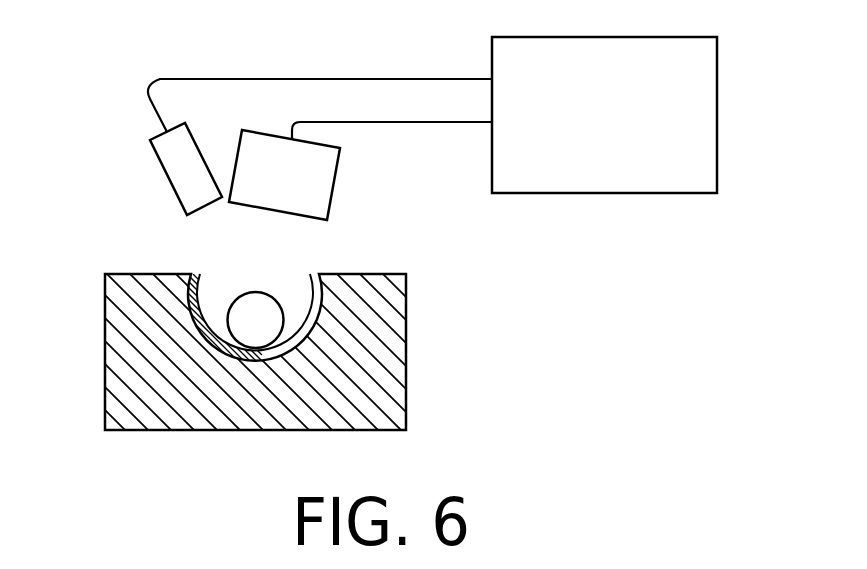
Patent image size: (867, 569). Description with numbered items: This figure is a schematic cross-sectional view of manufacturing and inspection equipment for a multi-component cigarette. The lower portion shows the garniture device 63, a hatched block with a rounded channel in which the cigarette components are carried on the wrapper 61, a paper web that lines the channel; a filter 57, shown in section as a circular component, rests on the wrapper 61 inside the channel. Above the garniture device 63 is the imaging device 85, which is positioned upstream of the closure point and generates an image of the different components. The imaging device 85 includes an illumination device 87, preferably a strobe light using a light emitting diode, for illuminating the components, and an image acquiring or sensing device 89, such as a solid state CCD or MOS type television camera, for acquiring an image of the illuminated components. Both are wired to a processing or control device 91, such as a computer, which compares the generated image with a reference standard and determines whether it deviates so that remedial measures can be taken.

The imaging device 85 is at (121, 123).
The illumination device 87 is at (165, 173).
The image acquiring or sensing device 89 is at (335, 182).
The processing or control device 91 is at (559, 193).
The wrapper 61 is at (310, 296).
The filter 57 is at (272, 323).
The garniture device 63 is at (418, 384).